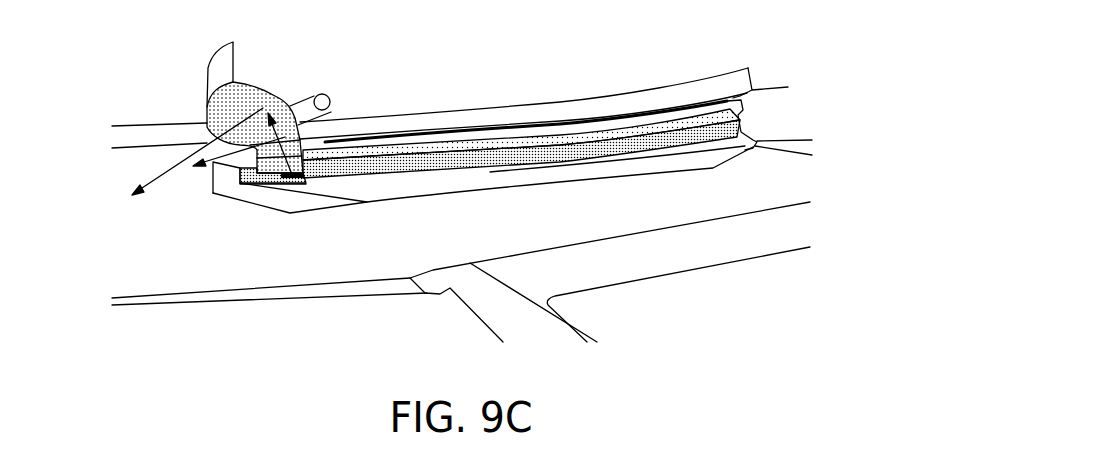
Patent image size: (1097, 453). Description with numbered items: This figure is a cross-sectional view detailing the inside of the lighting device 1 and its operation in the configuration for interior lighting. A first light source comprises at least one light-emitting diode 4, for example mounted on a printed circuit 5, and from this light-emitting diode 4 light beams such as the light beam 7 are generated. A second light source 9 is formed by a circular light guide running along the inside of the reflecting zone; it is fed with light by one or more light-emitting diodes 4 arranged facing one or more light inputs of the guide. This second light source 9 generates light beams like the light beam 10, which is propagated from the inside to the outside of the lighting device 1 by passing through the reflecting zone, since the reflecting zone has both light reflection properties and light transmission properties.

The lighting device 1 is at (434, 201).
The light-emitting diode 4 is at (304, 158).
The printed circuit 5 is at (281, 196).
The light beam 7 is at (202, 123).
The second light source 9 is at (327, 76).
The light beam 10 is at (208, 179).